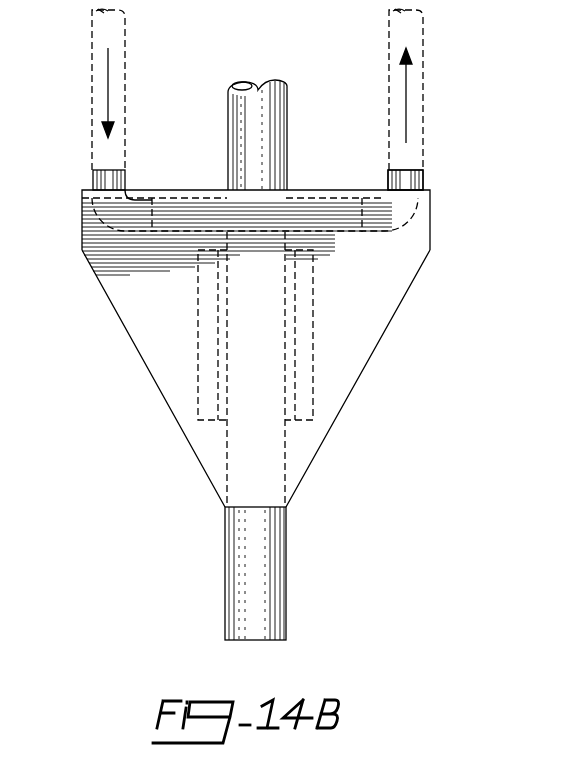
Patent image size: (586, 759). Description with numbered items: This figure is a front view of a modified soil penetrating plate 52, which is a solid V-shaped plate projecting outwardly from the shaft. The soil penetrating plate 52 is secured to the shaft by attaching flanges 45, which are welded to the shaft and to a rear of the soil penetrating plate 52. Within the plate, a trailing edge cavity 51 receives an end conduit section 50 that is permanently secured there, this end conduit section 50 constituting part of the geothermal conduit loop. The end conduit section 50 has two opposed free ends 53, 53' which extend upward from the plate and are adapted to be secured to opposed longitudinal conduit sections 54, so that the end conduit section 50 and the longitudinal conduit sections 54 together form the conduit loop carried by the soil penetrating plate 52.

The attaching flanges 45 is at (207, 372).
The end conduit section 50 is at (132, 184).
The trailing edge cavity 51 is at (385, 193).
The soil penetrating plate 52 is at (153, 302).
The free end 53 is at (73, 168).
The free end 53' is at (437, 168).
The longitudinal conduit sections 54 is at (125, 52).